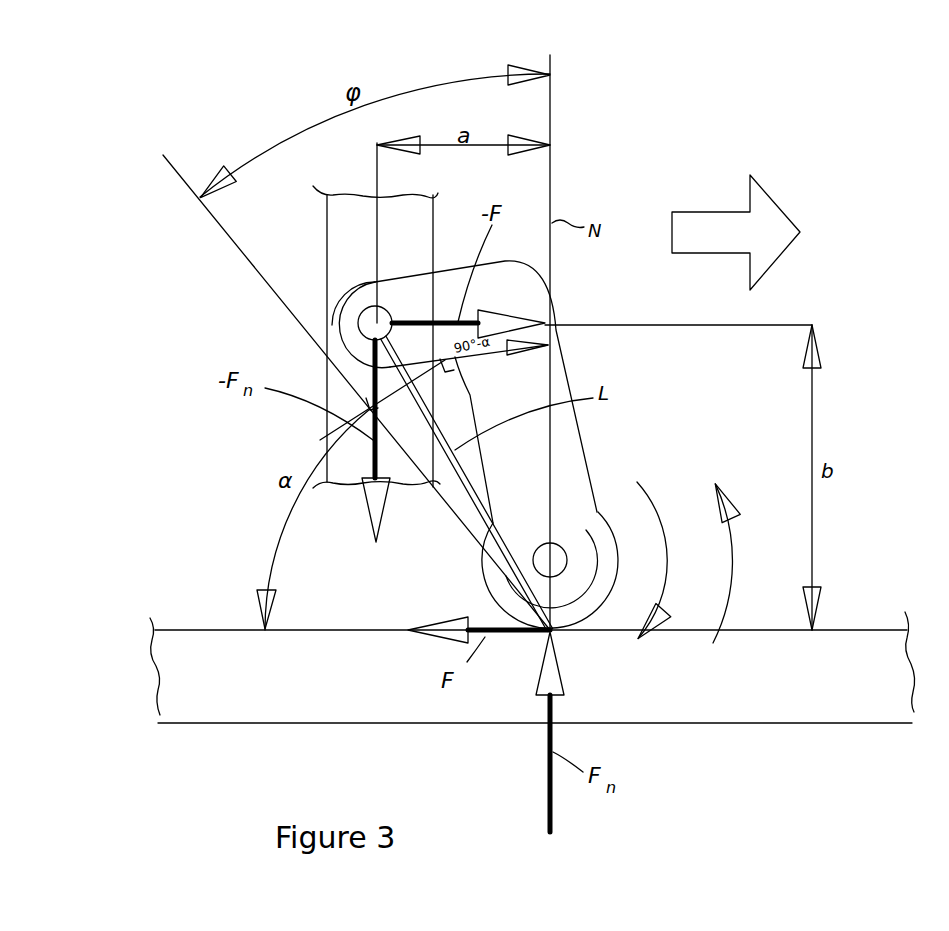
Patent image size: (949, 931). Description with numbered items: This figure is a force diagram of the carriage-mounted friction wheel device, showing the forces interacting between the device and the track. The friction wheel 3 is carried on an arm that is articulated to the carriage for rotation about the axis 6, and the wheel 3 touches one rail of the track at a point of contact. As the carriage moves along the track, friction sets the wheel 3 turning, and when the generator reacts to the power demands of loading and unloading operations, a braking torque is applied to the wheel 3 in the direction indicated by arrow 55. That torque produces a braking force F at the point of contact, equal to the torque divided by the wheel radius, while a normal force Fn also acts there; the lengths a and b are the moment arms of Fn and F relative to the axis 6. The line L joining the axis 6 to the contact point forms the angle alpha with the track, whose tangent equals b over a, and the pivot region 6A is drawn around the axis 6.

The friction wheel 3 is at (603, 545).
The axis 6 is at (374, 322).
The pivot boss / bearing 6A is at (365, 322).
The arrow 55 is at (732, 565).